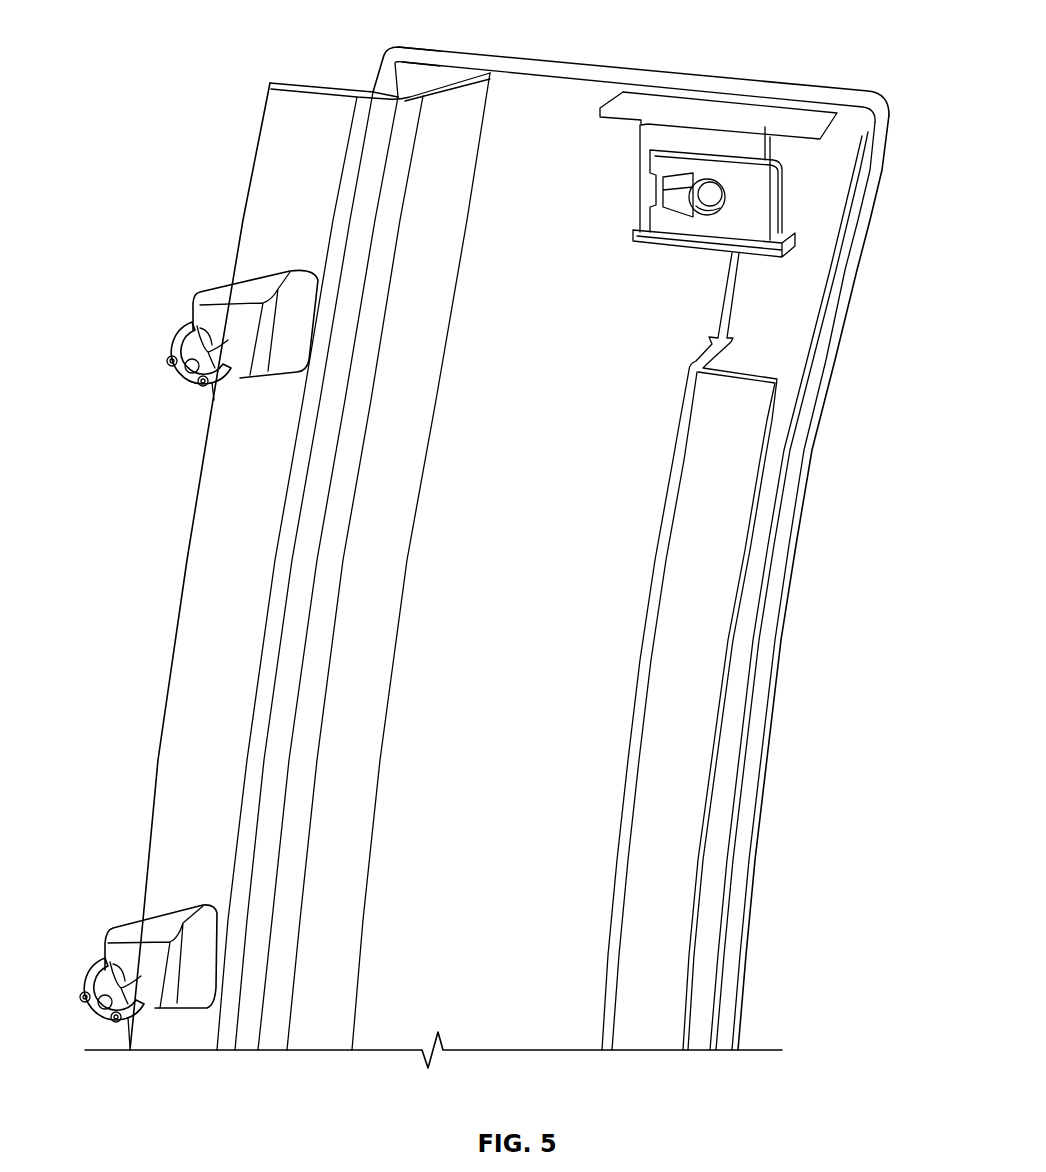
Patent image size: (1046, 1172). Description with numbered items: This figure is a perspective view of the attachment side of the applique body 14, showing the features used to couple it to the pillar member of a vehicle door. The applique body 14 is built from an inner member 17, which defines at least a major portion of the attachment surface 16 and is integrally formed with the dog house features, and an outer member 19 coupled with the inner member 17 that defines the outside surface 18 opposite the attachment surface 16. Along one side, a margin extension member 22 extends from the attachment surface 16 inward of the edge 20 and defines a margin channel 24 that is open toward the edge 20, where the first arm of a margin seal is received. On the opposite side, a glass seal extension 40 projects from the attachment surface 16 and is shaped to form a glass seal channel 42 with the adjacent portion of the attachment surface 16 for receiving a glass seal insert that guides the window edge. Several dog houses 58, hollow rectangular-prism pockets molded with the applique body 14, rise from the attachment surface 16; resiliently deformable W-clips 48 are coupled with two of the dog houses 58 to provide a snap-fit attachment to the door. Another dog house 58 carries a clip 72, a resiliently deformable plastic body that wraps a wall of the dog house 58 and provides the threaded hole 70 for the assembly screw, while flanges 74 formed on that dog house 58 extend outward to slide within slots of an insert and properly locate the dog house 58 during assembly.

The applique body 14 is at (777, 49).
The attachment surface 16 is at (550, 573).
The inner member 17 is at (543, 92).
The outside surface 18 is at (815, 582).
The outer member 19 is at (853, 221).
The edge 20 is at (797, 547).
The margin extension member 22 is at (698, 667).
The margin channel 24 is at (744, 651).
The glass seal extension 40 is at (196, 525).
The glass seal channel 42 is at (370, 72).
The W-clip 48 is at (170, 347).
The dog house 58 is at (506, 516).
The threaded hole 70 is at (690, 214).
The clip 72 is at (762, 202).
The flange 74 is at (618, 104).